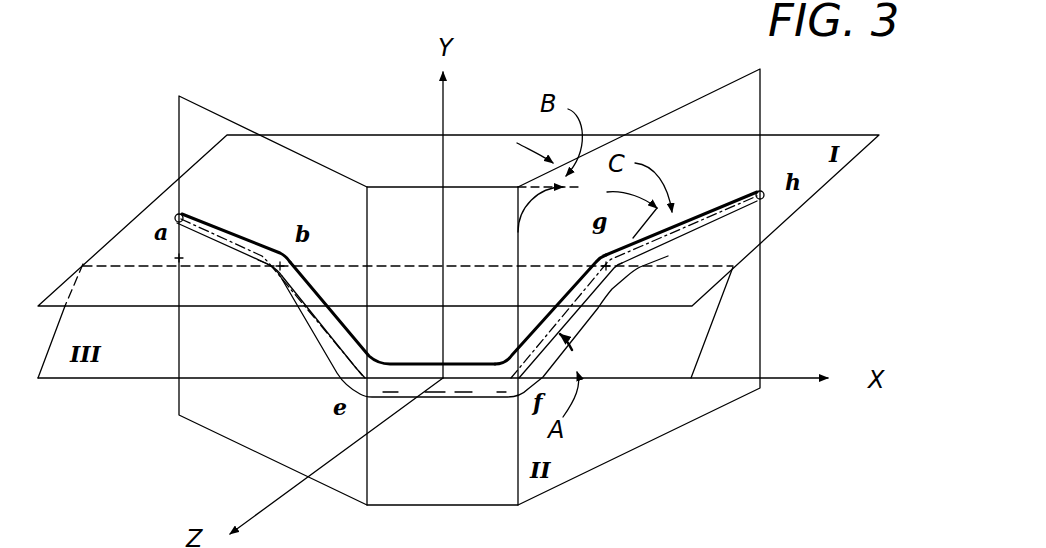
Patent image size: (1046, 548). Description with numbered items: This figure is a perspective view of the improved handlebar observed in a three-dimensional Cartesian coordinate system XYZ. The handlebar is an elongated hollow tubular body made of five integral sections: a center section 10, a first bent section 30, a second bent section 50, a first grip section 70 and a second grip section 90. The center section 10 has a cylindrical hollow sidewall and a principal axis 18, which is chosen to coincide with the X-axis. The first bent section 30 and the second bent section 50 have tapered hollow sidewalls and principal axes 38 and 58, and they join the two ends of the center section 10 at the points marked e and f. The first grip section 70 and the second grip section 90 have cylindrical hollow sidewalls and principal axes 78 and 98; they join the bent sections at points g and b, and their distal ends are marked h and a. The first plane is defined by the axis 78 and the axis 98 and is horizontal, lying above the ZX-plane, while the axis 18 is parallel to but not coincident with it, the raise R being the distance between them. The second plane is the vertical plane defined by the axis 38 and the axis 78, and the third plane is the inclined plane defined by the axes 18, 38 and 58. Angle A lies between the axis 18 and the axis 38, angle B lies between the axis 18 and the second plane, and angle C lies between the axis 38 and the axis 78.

The center section 10 is at (448, 402).
The principal axis of center section 18 is at (427, 378).
The first bent section 30 is at (585, 333).
The principal axis of first bent section 38 is at (583, 297).
The second bent section 50 is at (308, 340).
The principal axis of second bent section 58 is at (315, 315).
The first grip section 70 is at (697, 207).
The principal axis of first grip section 78 is at (713, 210).
The second grip section 90 is at (235, 222).
The principal axis of second grip section 98 is at (210, 220).